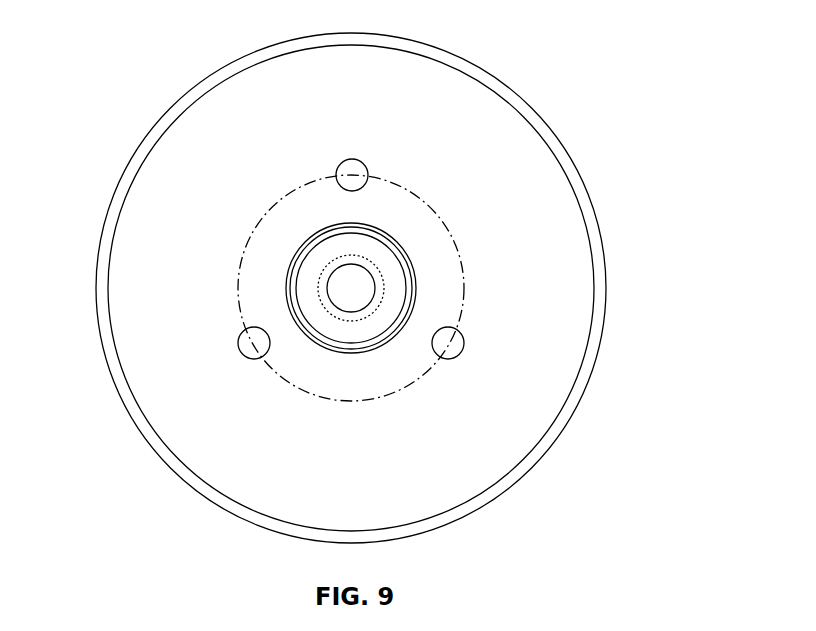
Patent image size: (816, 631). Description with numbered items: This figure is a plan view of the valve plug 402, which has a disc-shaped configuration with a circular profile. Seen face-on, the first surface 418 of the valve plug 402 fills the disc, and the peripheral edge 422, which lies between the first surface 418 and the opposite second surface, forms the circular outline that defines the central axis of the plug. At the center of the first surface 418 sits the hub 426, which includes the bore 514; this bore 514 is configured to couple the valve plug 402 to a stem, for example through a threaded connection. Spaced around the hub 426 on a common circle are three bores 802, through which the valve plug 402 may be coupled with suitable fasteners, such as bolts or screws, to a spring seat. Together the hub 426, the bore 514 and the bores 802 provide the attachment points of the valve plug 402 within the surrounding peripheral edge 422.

The valve plug 402 is at (623, 40).
The first surface 418 is at (557, 318).
The peripheral edge 422 is at (607, 263).
The hub 426 is at (414, 287).
The bore 514 is at (362, 287).
The bores 802 is at (344, 165).